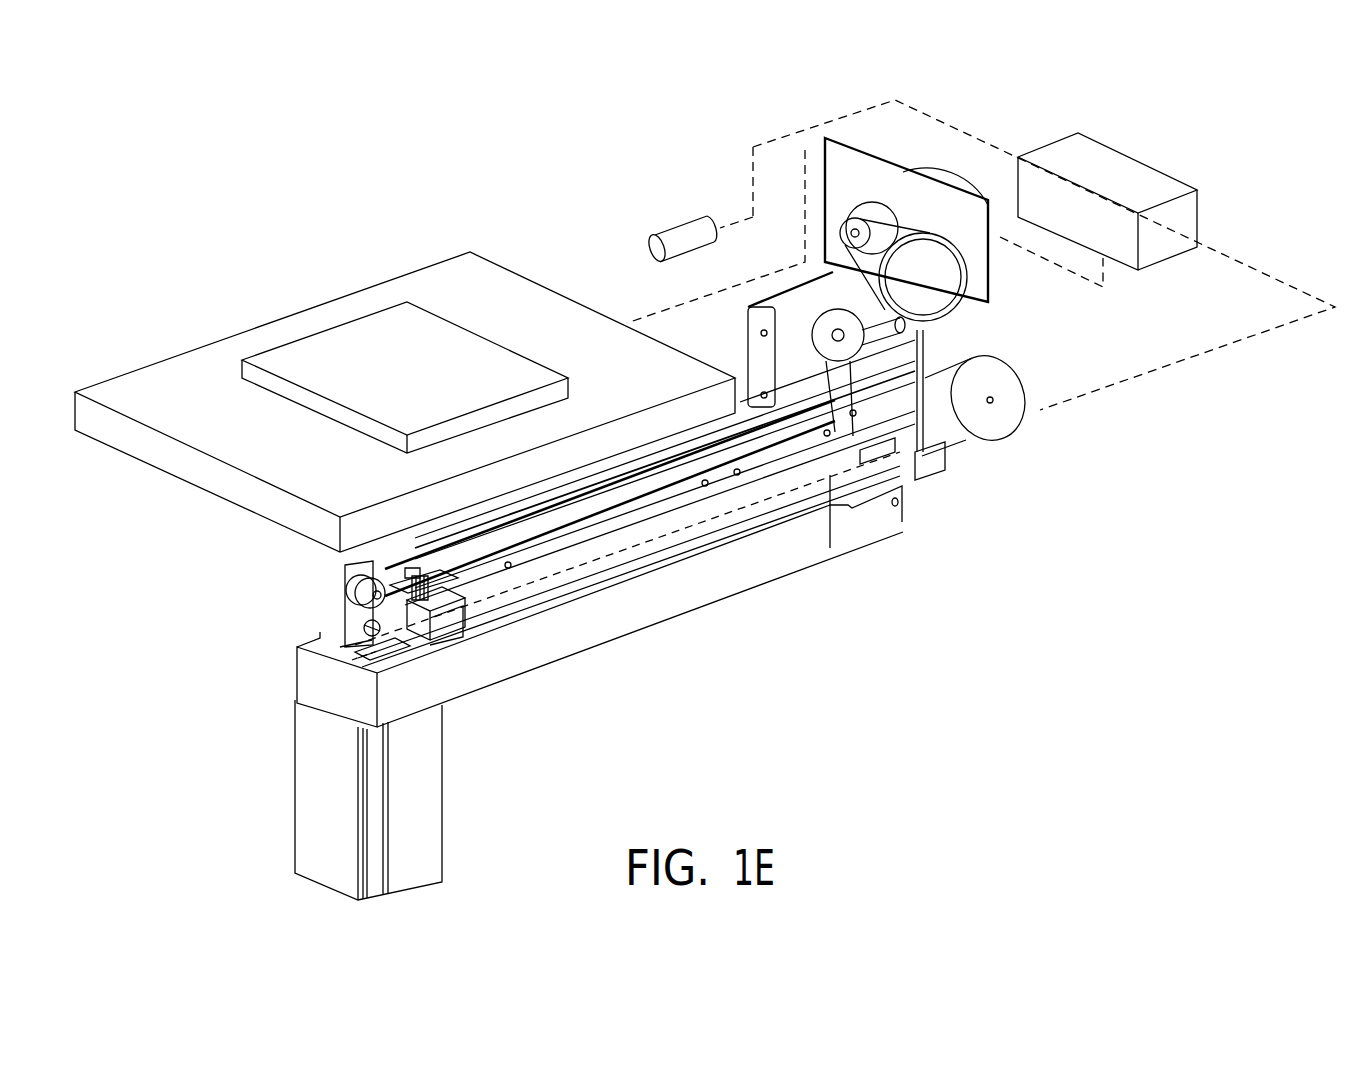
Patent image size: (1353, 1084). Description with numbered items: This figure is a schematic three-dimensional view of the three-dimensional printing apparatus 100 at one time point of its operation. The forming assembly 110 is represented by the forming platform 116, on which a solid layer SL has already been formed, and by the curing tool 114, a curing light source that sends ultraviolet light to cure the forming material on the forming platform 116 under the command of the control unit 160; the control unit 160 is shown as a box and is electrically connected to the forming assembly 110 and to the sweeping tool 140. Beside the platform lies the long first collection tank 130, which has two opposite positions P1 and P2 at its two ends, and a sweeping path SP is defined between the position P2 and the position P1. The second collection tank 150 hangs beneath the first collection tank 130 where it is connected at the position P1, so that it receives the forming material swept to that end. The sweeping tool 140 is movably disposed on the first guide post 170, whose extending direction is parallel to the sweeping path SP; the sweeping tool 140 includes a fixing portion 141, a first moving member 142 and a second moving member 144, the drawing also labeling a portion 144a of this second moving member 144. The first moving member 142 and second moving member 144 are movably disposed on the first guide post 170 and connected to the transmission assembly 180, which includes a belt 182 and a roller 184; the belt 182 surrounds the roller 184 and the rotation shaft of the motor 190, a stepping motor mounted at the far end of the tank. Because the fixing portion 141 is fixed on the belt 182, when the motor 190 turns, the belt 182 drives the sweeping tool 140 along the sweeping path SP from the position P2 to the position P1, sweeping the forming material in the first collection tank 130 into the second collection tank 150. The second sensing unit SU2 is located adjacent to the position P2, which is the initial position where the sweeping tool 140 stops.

The 3D printing apparatus 100 is at (1117, 800).
The forming assembly 110 is at (256, 223).
The curing tool 114 is at (687, 235).
The forming platform 116 is at (133, 505).
The first collection tank 130 is at (508, 652).
The sweeping tool 140 is at (146, 108).
The fixing portion 141 is at (412, 568).
The first moving member 142 is at (358, 604).
The second moving member 144 is at (403, 620).
The clamp portion 144a is at (440, 580).
The second collection tank 150 is at (427, 817).
The control unit 160 is at (1122, 177).
The first guide post 170 is at (730, 488).
The transmission assembly 180 is at (147, 225).
The belt 182 is at (663, 457).
The roller 184 is at (383, 565).
The motor 190 is at (1000, 380).
The position P1 is at (400, 627).
The position P2 is at (880, 455).
The solid layer SL is at (398, 338).
The sweeping path SP is at (352, 660).
The second sensing unit SU2 is at (836, 458).